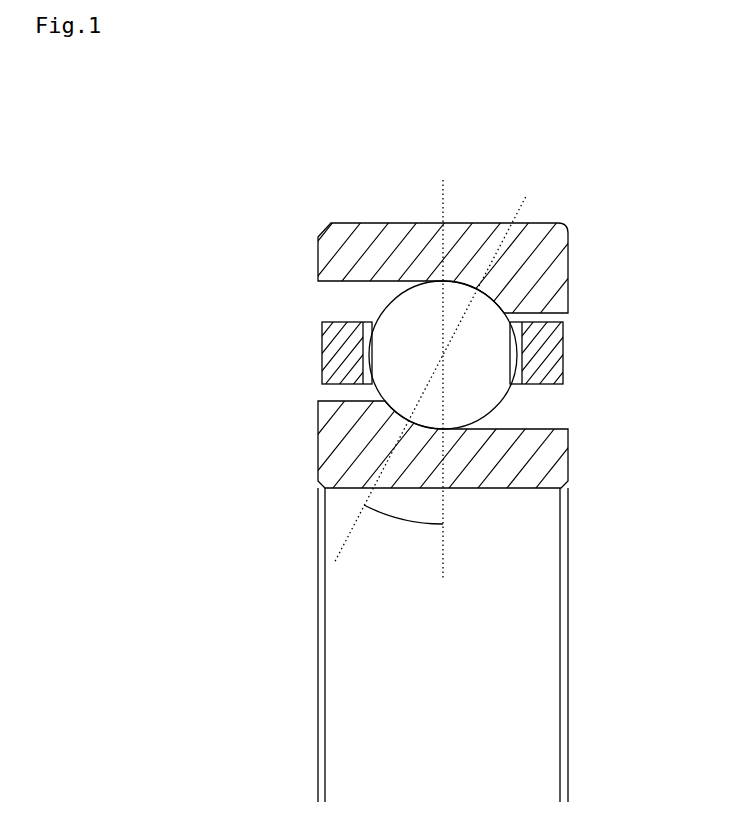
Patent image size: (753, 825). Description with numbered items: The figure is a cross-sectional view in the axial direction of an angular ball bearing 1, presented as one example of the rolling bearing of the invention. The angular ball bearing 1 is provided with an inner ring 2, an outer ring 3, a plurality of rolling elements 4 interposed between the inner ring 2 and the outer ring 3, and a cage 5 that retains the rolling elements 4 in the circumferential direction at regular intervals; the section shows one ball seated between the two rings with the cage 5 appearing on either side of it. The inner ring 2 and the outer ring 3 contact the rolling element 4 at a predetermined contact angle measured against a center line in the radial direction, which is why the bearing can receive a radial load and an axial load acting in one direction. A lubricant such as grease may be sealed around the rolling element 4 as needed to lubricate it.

The angular ball bearing 1 is at (300, 232).
The inner ring 2 is at (487, 460).
The outer ring 3 is at (533, 240).
The rolling element 4 is at (483, 372).
The cage 5 is at (335, 347).